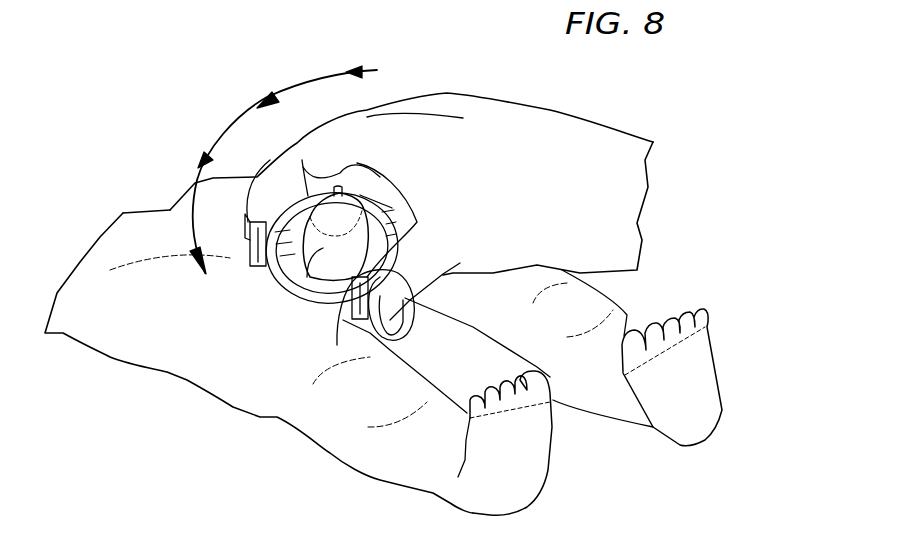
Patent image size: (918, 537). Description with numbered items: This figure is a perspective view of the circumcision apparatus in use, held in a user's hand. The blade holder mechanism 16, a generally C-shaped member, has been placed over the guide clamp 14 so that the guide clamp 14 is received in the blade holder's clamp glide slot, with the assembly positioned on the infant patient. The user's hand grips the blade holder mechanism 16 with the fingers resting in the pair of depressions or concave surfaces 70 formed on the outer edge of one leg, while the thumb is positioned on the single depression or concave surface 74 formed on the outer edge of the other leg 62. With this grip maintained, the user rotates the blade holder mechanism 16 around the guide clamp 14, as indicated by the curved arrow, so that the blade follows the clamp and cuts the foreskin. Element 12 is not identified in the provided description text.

The annular base ring 12 is at (310, 308).
The guide clamp 14 is at (283, 300).
The blade holder mechanism 16 is at (380, 200).
The leg 62 is at (407, 297).
The depressions or concave surfaces 70 is at (262, 275).
The depression or concave surface 74 is at (318, 302).